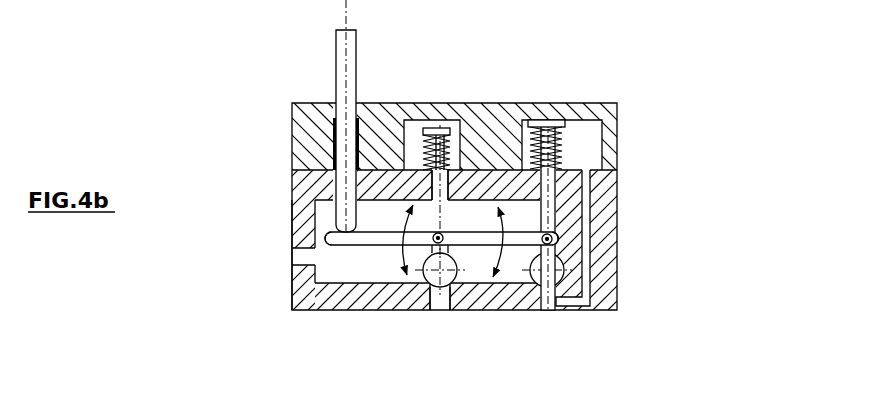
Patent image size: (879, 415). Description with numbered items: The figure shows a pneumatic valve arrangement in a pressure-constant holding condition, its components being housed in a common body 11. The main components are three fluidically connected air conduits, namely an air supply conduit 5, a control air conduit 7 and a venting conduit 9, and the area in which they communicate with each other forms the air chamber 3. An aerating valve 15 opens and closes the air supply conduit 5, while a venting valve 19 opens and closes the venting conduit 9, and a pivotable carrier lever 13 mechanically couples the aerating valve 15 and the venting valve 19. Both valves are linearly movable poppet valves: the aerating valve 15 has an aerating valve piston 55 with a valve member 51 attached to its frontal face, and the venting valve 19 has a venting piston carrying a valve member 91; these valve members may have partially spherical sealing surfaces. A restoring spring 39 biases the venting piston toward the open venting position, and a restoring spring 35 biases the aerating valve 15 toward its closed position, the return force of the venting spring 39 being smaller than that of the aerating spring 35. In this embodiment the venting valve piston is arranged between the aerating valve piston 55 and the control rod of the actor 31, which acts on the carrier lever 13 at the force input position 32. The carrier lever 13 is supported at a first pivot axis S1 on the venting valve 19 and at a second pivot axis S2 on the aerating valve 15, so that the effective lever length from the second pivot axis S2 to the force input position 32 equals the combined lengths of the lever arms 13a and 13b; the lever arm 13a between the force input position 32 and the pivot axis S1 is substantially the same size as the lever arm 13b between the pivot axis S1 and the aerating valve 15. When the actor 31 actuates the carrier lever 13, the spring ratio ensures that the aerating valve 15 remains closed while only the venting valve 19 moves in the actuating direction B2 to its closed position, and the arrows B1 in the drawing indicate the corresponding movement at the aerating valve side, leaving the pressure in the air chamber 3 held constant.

The valve body 11 is at (617, 106).
The aerating valve piston 55 is at (588, 197).
The force input position 32 is at (345, 233).
The control air conduit 7 is at (302, 259).
The valve member 91 is at (458, 283).
The valve member 51 is at (562, 272).
The aerating valve 15 is at (527, 288).
The venting conduit 9 is at (437, 300).
The restoring spring 39 is at (432, 128).
The air supply conduit 5 is at (547, 303).
The restoring spring 35 is at (562, 132).
The carrier lever 13 is at (477, 222).
The lever arm 13a is at (365, 243).
The lever arm 13b is at (560, 243).
The first pivot axis S1 is at (440, 240).
The second pivot axis S2 is at (550, 240).
The actor 31 is at (373, 62).
The venting valve 19 is at (418, 281).
The actuating direction B2 is at (387, 240).
The movement direction B1 is at (515, 242).
The air chamber 3 is at (519, 278).